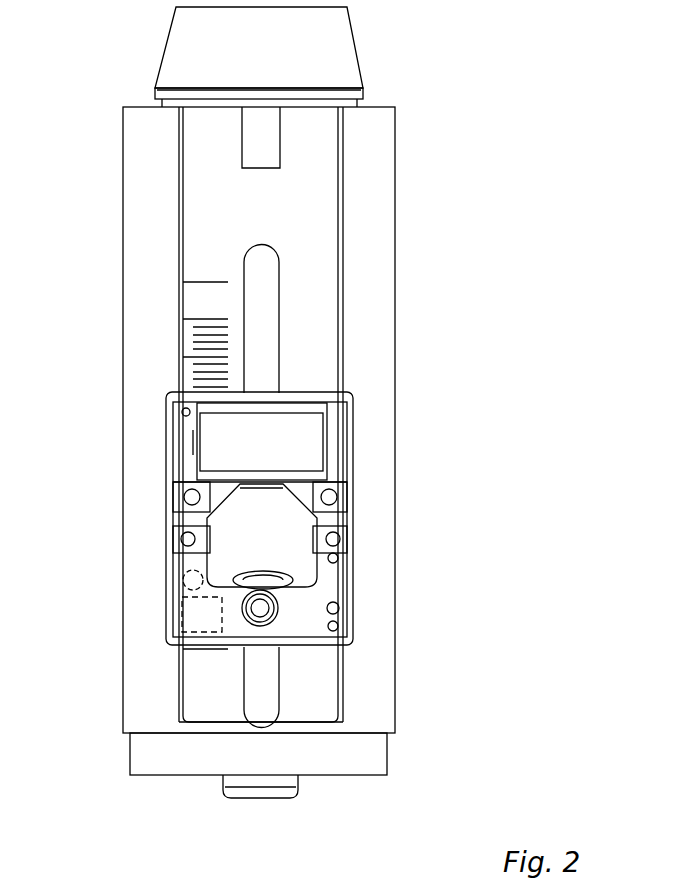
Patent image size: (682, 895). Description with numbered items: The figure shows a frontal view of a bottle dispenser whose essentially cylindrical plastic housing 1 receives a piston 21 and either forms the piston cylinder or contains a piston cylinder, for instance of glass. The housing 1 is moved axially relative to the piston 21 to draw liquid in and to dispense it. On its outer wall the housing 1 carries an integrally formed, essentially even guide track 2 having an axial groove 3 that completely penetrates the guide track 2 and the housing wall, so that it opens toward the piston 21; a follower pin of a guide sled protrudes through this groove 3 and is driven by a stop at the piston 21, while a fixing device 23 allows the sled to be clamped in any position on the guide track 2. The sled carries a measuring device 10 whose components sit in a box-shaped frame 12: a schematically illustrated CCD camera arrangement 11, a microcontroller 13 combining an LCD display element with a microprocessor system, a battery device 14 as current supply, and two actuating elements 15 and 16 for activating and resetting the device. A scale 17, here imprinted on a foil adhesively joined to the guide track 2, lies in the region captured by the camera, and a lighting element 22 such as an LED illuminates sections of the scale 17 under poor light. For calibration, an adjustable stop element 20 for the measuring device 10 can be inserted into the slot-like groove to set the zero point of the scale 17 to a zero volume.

The housing 1 is at (378, 190).
The guide track 2 is at (320, 209).
The groove 3 is at (276, 294).
The measuring device 10 is at (372, 531).
The CCD camera arrangement 11 is at (182, 620).
The box-shaped frame 12 is at (352, 418).
The microcontroller 13 is at (287, 453).
The battery device 14 is at (275, 586).
The actuating element 15 is at (337, 495).
The actuating element 16 is at (183, 497).
The scale 17 is at (200, 332).
The adjustable stop element 20 is at (263, 138).
The piston 21 is at (240, 798).
The lighting element 22 is at (183, 587).
The fixing device 23 is at (277, 620).